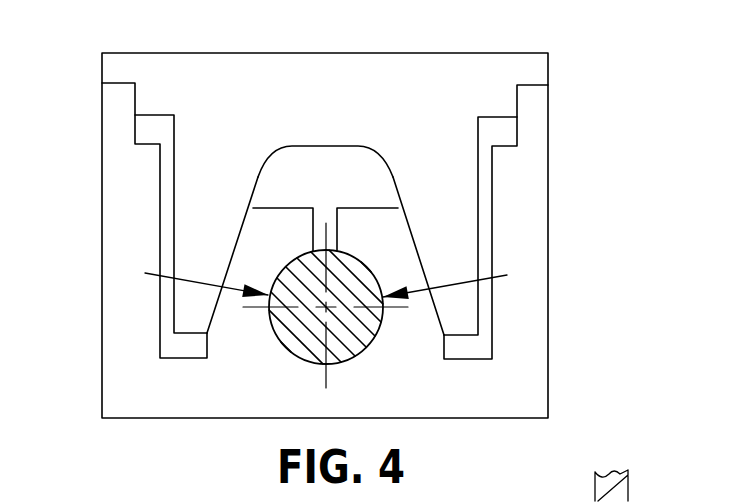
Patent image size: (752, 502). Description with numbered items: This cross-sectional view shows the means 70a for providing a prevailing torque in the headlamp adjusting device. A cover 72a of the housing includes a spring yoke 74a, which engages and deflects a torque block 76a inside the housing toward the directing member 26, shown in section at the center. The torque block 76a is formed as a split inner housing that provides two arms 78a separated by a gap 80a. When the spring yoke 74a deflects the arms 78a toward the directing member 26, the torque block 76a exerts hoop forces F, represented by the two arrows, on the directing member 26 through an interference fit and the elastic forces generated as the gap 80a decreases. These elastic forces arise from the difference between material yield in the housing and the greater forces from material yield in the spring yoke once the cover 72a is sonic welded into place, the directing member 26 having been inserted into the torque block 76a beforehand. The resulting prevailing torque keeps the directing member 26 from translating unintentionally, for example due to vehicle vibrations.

The means for providing a prevailing torque 70a is at (582, 182).
The cover 72a is at (412, 77).
The spring yoke 74a is at (483, 245).
The torque block 76a is at (252, 262).
The arms 78a is at (227, 228).
The gap 80a is at (292, 162).
The directing member 26 is at (305, 340).
The hoop forces F is at (327, 278).